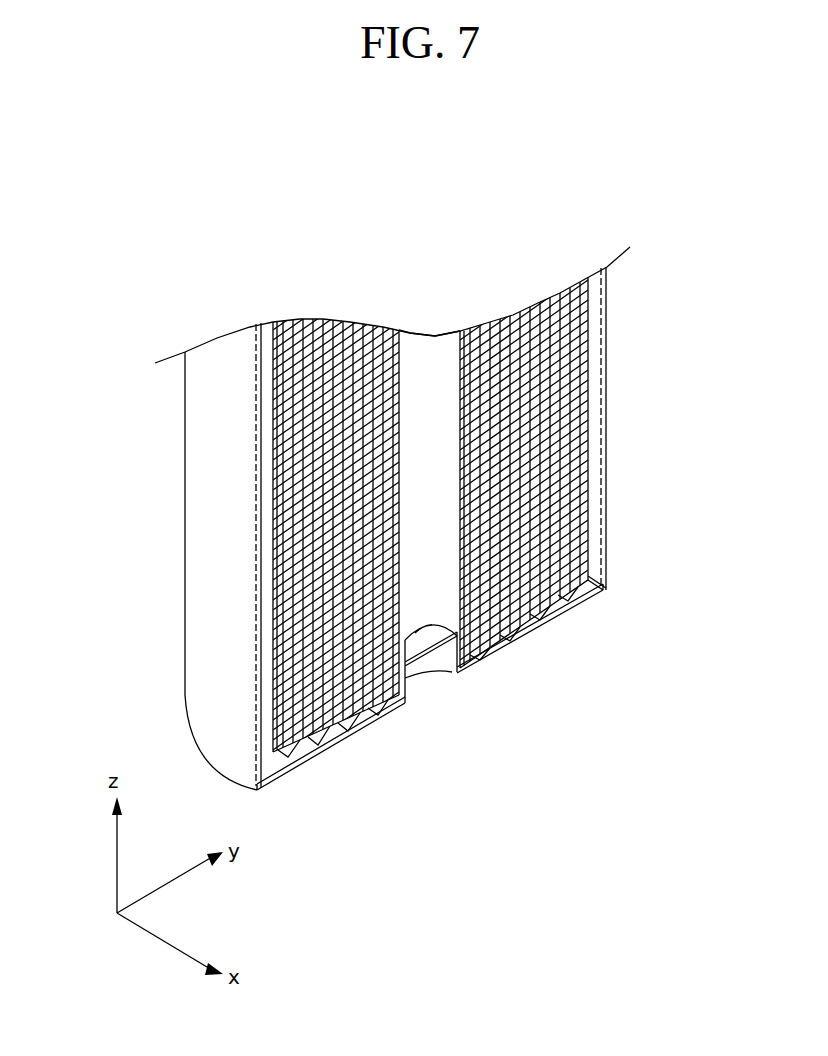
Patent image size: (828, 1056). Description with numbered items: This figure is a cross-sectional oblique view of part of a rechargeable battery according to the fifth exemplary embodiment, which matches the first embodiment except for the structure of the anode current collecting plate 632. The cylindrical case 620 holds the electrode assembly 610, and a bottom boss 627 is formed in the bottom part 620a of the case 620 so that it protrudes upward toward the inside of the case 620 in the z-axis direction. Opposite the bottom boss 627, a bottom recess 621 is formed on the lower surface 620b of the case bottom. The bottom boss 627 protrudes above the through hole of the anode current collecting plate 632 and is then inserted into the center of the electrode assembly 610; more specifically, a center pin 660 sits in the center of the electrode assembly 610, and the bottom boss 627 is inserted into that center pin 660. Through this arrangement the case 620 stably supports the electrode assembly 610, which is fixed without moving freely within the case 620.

The electrode assembly 610 is at (510, 634).
The case 620 is at (192, 495).
The case bottom edge 620a is at (606, 590).
The lower surface 620b is at (588, 610).
The bottom recess 621 is at (405, 681).
The bottom boss 627 is at (418, 631).
The anode current collecting plate 632 is at (310, 761).
The center pin 660 is at (427, 413).